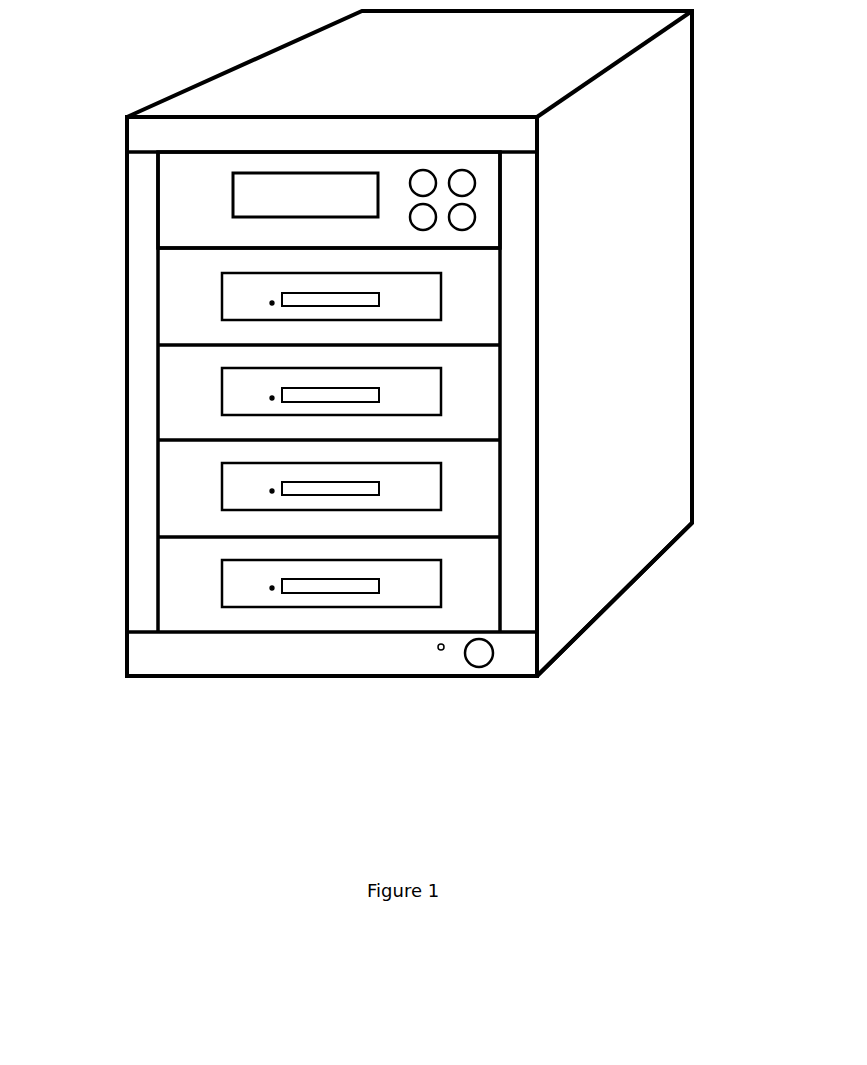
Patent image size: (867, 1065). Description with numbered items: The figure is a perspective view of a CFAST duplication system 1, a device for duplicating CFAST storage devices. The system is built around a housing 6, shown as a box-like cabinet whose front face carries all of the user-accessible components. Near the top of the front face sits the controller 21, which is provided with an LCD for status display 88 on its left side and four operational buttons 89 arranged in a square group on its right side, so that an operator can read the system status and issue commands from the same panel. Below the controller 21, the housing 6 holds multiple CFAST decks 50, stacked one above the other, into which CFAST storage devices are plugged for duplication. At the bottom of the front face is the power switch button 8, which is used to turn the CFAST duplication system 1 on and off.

The CFAST duplication system 1 is at (228, 703).
The housing 6 is at (675, 312).
The power switch button 8 is at (485, 668).
The controller 21 is at (182, 202).
The CFAST decks 50 is at (182, 575).
The LCD for status display 88 is at (230, 182).
The operational buttons 89 is at (487, 183).